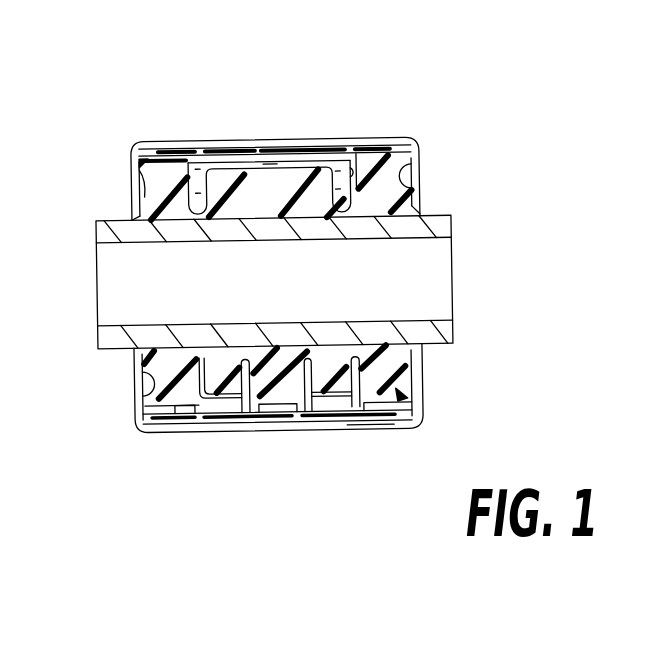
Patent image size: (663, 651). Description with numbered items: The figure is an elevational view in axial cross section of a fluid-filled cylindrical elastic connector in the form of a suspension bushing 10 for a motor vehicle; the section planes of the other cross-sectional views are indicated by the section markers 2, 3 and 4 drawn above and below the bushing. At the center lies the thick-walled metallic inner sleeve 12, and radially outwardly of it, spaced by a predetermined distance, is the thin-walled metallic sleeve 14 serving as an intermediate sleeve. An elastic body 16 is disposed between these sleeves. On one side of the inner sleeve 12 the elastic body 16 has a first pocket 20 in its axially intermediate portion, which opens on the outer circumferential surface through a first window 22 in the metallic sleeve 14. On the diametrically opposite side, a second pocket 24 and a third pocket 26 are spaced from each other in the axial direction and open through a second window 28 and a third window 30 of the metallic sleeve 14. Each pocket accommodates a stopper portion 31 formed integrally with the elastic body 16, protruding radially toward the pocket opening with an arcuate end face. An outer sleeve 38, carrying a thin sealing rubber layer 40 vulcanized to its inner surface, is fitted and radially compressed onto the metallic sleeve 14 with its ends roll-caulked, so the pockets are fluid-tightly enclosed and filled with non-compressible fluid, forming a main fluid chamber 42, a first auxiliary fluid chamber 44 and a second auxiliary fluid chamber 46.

The section line 2- 2 is at (222, 72).
The section line 3- 3 is at (325, 72).
The section line 4- 4 is at (270, 72).
The suspension bushing 10 is at (405, 76).
The inner sleeve 12 is at (441, 347).
The metallic sleeve 14 is at (197, 407).
The elastic body 16 is at (148, 204).
The first pocket 20 is at (360, 179).
The first window 22 is at (201, 152).
The second pocket 24 is at (198, 378).
The third pocket 26 is at (342, 378).
The second window 28 is at (207, 412).
The third window 30 is at (343, 417).
The stopper portion 31 is at (284, 178).
The outer sleeve 38 is at (293, 412).
The sealing rubber layer 40 is at (243, 160).
The main fluid chamber 42 is at (324, 165).
The first auxiliary fluid chamber 44 is at (243, 410).
The second auxiliary fluid chamber 46 is at (356, 368).